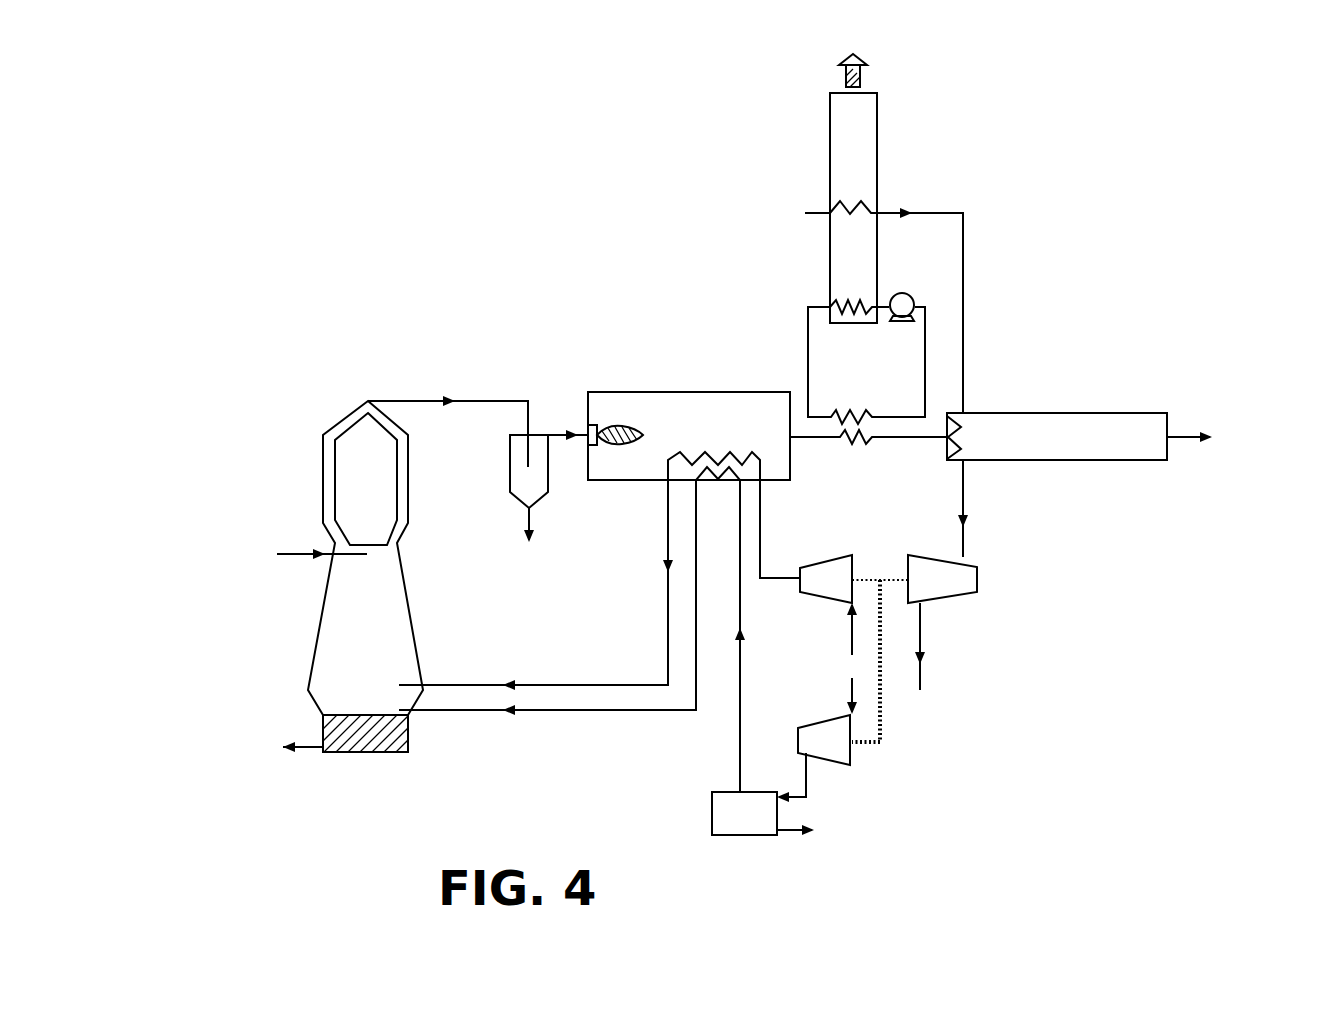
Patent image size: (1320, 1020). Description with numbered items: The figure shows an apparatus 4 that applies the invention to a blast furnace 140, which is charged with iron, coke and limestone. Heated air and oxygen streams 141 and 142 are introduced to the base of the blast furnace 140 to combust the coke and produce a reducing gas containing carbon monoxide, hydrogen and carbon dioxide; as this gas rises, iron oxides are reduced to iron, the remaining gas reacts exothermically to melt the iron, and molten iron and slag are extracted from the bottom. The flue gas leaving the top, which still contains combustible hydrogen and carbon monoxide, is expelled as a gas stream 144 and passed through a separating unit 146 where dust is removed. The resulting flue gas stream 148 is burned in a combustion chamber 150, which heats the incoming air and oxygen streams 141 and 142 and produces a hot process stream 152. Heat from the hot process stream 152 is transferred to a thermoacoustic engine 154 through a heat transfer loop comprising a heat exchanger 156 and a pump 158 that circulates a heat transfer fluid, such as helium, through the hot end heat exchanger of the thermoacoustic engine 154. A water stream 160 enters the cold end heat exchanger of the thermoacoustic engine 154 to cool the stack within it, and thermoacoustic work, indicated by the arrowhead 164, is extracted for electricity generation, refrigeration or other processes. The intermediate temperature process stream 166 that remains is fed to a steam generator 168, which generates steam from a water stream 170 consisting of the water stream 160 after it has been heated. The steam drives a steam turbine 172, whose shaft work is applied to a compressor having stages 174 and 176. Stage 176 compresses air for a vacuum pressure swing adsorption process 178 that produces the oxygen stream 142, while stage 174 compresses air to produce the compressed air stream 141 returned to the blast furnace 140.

The apparatus 4 is at (1086, 266).
The blast furnace 140 is at (317, 633).
The air stream 141 is at (624, 684).
The oxygen stream 142 is at (605, 712).
The gas stream 144 is at (483, 405).
The separating unit 146 is at (545, 433).
The flue gas stream 148 is at (573, 433).
The combustion chamber 150 is at (740, 392).
The hot process stream 152 is at (823, 439).
The thermoacoustic engine 154 is at (828, 233).
The heat exchanger 156 is at (868, 408).
The pump 158 is at (905, 293).
The water stream 160 is at (828, 210).
The arrowhead 164 is at (865, 72).
The intermediate temperature process stream 166 is at (932, 436).
The steam generator 168 is at (1120, 412).
The water stream 170 is at (964, 275).
The steam turbine 172 is at (967, 582).
The compressor stage 174 is at (825, 575).
The compressor stage 176 is at (824, 735).
The vacuum pressure swing adsorption process 178 is at (760, 838).